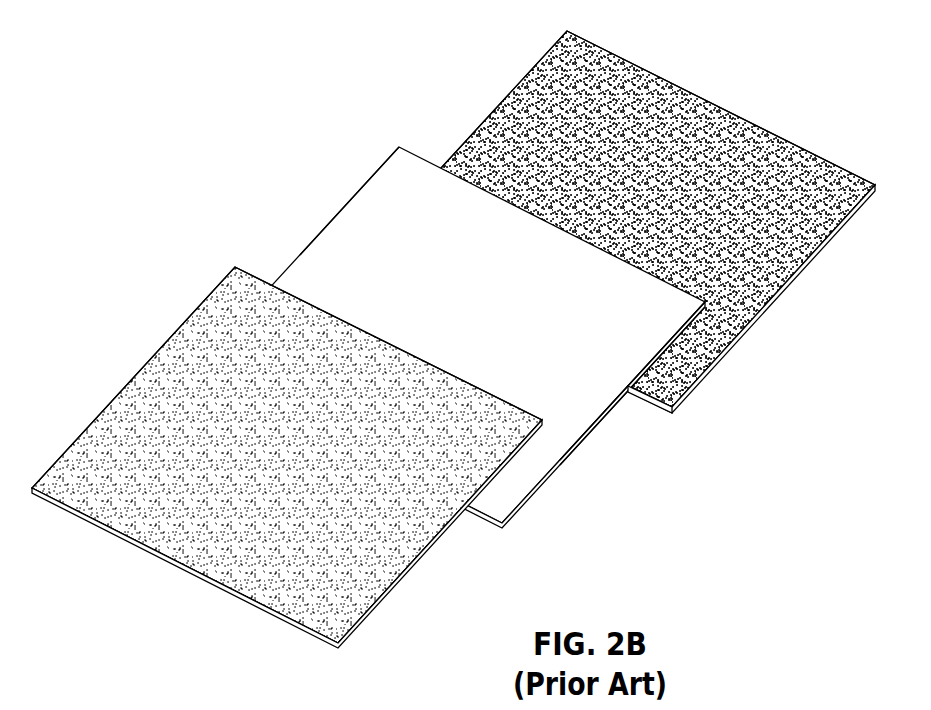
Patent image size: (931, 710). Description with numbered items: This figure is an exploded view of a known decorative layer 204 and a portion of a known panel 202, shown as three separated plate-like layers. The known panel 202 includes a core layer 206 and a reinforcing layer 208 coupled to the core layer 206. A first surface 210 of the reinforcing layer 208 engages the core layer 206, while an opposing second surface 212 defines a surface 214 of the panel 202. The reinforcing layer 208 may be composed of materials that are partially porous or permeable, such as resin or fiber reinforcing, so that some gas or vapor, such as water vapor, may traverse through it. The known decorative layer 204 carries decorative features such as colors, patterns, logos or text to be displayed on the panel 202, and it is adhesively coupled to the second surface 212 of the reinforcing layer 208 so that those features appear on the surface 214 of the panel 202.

The known panel 202 is at (380, 119).
The known decorative layer 204 is at (97, 438).
The core layer 206 is at (508, 112).
The reinforcing layer 208 is at (450, 337).
The first surface 210 is at (628, 397).
The second surface 212 is at (568, 420).
The surface 214 is at (293, 272).